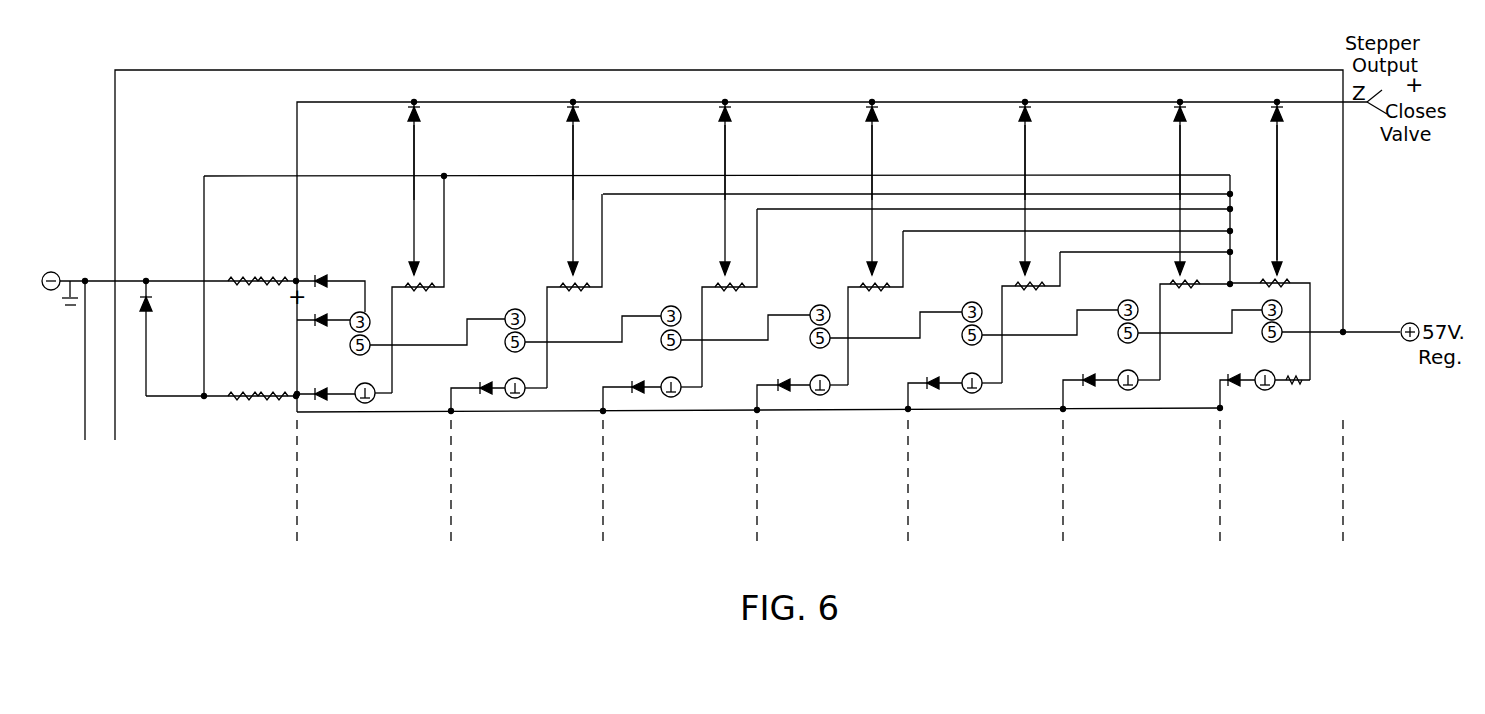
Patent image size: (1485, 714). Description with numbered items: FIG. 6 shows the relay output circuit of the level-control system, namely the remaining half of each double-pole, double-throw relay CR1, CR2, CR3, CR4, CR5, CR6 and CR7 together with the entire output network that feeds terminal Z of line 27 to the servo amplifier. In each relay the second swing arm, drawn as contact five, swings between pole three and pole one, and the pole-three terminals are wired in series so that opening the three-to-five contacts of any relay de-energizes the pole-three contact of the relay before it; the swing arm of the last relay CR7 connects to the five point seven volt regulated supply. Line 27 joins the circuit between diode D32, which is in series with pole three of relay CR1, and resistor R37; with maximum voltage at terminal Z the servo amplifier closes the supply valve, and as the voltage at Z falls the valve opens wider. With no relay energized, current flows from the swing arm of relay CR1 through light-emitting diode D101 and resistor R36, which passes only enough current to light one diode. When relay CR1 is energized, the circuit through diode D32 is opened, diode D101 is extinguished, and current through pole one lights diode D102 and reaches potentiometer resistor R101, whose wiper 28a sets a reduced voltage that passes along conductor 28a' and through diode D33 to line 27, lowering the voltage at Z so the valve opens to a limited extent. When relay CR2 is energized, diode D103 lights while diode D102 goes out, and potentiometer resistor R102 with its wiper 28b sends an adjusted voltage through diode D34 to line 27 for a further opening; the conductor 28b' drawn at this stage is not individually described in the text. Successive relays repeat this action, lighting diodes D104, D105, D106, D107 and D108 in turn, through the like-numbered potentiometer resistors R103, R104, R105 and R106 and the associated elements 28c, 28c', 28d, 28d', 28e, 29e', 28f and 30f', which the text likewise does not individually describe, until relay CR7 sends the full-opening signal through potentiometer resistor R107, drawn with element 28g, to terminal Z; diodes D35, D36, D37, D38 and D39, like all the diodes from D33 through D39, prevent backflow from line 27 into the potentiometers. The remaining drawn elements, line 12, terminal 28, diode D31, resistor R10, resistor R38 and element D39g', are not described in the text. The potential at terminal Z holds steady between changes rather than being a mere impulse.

The common supply line 12 is at (833, 70).
The line 27 is at (368, 100).
The ground / capacitor input 28 is at (66, 313).
The wiper 28a is at (449, 191).
The conductor 28a' is at (717, 160).
The potentiometer wiper 28b is at (579, 188).
The relay CR2 bus line 28b' is at (905, 169).
The relay CR3 drive line 28c is at (740, 188).
The relay CR3 bus line 28c' is at (981, 176).
The relay CR4 drive line 28d is at (889, 188).
The relay CR4 bus line 28d' is at (1054, 187).
The relay CR5 drive line 28e is at (1047, 256).
The relay CR5 bus line 29e' is at (1131, 198).
The relay CR6 drive line 28f is at (1192, 264).
The relay CR6 bus line 30f' is at (1211, 212).
The relay CR7 drive line 28g is at (1258, 188).
The relay CR7 drive line D39g' is at (1306, 190).
The diode D31 is at (164, 338).
The diode D32 is at (330, 268).
The diode D33 is at (439, 157).
The diode D34 is at (598, 157).
The diode D35 is at (750, 157).
The diode D36 is at (898, 157).
The diode D37 is at (1050, 157).
The diode D38 is at (1205, 157).
The diode D39 is at (1303, 157).
The light emitting diode D101 is at (311, 331).
The light emitting diode D102 is at (325, 379).
The light emitting diode D103 is at (466, 386).
The light emitting diode D104 is at (620, 386).
The light emitting diode D105 is at (771, 384).
The light emitting diode D106 is at (915, 384).
The light emitting diode D107 is at (1071, 382).
The light emitting diode D108 is at (1215, 383).
The potentiometer resistor R101 is at (393, 284).
The potentiometer resistor R102 is at (552, 291).
The relay coil R103 is at (707, 298).
The relay coil R104 is at (855, 306).
The relay coil R105 is at (1009, 308).
The relay coil R106 is at (1170, 307).
The potentiometer resistor R107 is at (1280, 304).
The resistor R10 is at (1299, 228).
The resistor R36 is at (222, 397).
The resistor R37 is at (246, 286).
The resistor R38 825 ohm R38 is at (1319, 392).
The relay CR1 is at (401, 429).
The relay CR2 is at (556, 428).
The relay CR3 is at (706, 426).
The relay CR4 is at (859, 426).
The relay CR5 is at (1013, 424).
The relay CR6 is at (1162, 423).
The relay CR7 is at (1310, 423).